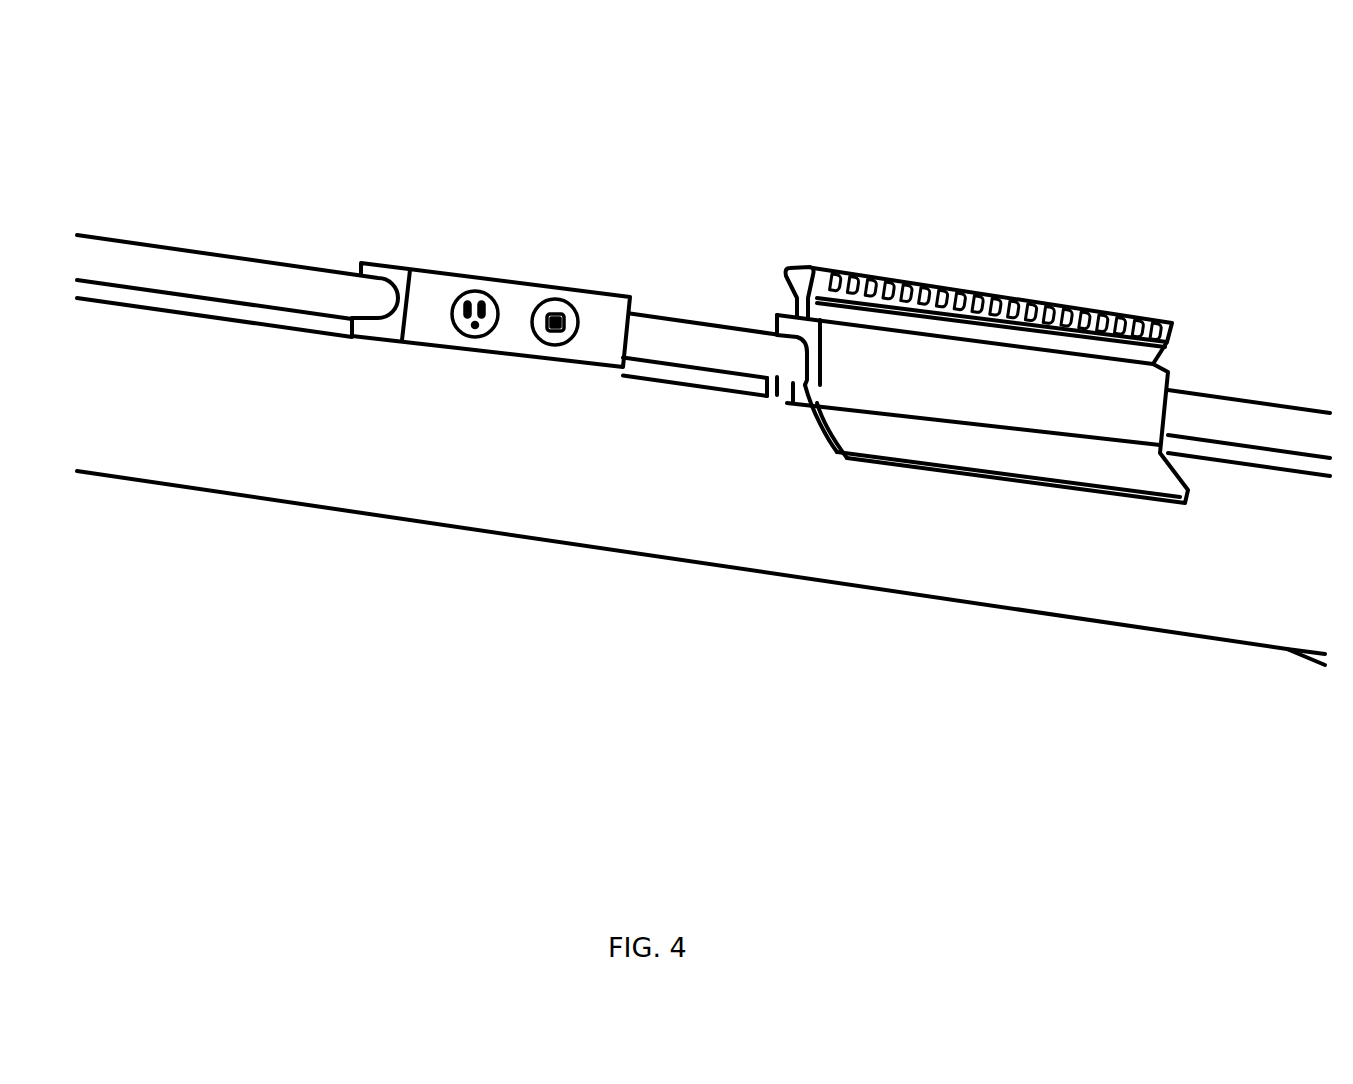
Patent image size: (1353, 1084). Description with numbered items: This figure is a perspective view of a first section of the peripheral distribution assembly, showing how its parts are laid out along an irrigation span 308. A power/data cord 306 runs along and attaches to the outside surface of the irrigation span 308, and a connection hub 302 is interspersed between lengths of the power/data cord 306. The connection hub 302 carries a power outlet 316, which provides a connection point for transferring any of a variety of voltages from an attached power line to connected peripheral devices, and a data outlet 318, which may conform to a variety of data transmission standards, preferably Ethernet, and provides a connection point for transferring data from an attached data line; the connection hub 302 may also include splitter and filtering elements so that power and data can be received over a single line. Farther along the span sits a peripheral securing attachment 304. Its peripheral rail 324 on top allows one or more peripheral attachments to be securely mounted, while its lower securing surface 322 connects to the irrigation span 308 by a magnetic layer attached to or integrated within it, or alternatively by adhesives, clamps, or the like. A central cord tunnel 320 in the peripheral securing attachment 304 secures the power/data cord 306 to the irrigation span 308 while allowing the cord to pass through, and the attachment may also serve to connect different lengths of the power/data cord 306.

The connection hub 302 is at (590, 215).
The peripheral securing attachment 304 is at (935, 383).
The power/data cord 306 is at (135, 267).
The irrigation span 308 is at (301, 457).
The power outlet 316 is at (475, 292).
The data outlet 318 is at (567, 320).
The central cord tunnel 320 is at (785, 387).
The lower securing surface 322 is at (908, 427).
The peripheral rail 324 is at (957, 290).